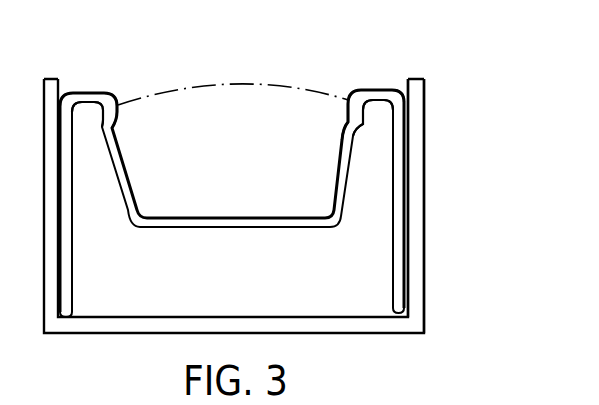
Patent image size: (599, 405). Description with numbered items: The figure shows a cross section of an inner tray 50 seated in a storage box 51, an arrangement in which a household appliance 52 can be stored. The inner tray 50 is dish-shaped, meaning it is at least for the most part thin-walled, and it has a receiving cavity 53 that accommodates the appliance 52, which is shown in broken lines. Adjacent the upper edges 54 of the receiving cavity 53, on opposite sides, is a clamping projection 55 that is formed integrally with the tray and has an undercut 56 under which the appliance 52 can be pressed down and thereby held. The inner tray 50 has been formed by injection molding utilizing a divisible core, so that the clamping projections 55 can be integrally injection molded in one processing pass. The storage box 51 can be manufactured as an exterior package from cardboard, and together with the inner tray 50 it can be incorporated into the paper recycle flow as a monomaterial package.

The inner tray 50 is at (400, 213).
The storage box 51 is at (415, 138).
The household appliance 52 is at (198, 85).
The receiving cavity 53 is at (250, 158).
The upper edges 54 is at (92, 89).
The clamping projection 55 is at (114, 99).
The undercut 56 is at (348, 95).